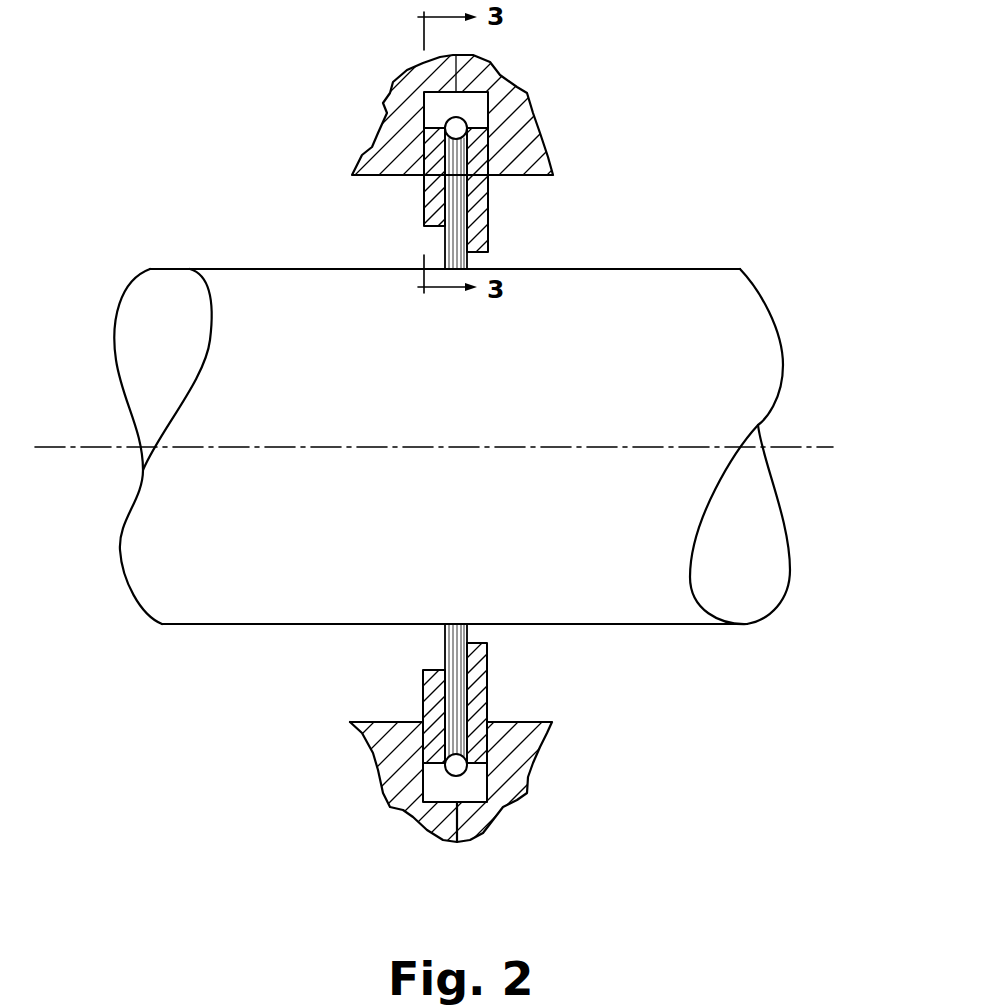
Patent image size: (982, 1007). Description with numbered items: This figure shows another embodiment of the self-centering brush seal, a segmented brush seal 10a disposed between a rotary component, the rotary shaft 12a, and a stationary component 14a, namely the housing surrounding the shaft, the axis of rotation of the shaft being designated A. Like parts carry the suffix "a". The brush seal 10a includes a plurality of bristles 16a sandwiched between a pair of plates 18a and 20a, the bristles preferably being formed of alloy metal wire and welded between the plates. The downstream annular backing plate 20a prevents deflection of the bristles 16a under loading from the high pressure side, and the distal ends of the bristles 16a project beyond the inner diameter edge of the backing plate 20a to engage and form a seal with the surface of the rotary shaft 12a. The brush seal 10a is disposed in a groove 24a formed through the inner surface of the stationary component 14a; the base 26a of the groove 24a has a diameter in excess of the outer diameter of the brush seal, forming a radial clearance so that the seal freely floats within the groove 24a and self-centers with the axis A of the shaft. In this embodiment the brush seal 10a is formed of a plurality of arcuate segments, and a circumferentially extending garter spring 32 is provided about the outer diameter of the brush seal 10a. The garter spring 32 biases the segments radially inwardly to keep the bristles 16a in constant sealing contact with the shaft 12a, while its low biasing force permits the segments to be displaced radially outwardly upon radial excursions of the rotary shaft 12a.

The brush seal 10a is at (463, 150).
The rotary shaft 12a is at (180, 297).
The stationary component 14a is at (387, 107).
The bristles 16a is at (468, 632).
The plate 18a is at (445, 759).
The backing plate 20a is at (482, 672).
The groove 24a is at (440, 793).
The base of the groove 26a is at (467, 797).
The garter spring 32 is at (483, 787).
The axis of rotation A is at (802, 450).